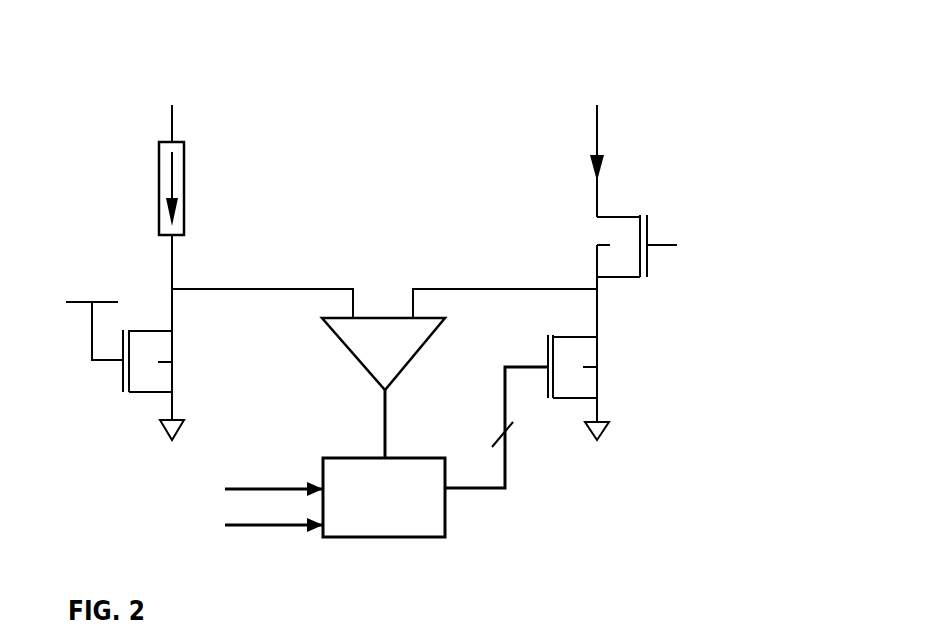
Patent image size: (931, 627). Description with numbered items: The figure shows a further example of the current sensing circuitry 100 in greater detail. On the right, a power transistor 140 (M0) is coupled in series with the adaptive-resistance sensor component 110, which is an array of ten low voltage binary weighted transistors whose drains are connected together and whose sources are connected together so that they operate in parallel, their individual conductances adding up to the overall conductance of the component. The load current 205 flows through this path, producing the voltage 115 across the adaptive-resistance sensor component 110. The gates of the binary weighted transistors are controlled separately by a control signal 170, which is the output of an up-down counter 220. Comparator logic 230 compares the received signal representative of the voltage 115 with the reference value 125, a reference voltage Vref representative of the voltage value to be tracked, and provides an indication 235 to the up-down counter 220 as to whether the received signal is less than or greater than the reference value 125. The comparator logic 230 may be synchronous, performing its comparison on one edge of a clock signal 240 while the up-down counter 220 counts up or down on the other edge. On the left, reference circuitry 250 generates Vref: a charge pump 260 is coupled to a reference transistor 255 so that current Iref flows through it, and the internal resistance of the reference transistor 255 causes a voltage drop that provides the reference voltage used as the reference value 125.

The current sensing circuitry 100 is at (738, 86).
The adaptive-resistance sensor component 110 is at (602, 378).
The voltage across the adaptive-resistance sensor component 115 is at (570, 290).
The reference value 125 is at (362, 292).
The power transistor 140 is at (653, 213).
The control signal 170 is at (485, 491).
The load current 205 is at (590, 158).
The up-down counter 220 is at (385, 540).
The comparator logic 230 is at (363, 350).
The indication 235 is at (400, 410).
The clock signal 240 is at (298, 478).
The reference circuitry 250 is at (72, 176).
The reference transistor 255 is at (123, 393).
The charge pump 260 is at (188, 163).